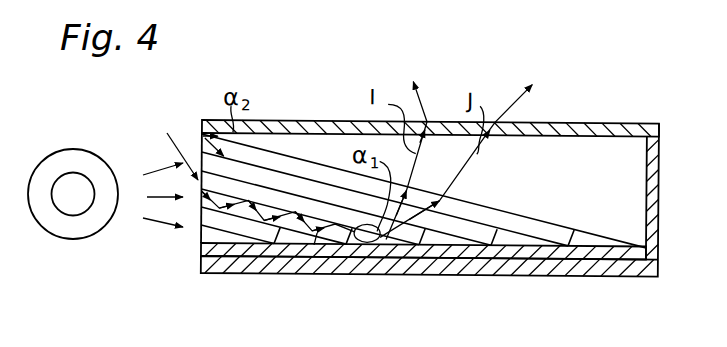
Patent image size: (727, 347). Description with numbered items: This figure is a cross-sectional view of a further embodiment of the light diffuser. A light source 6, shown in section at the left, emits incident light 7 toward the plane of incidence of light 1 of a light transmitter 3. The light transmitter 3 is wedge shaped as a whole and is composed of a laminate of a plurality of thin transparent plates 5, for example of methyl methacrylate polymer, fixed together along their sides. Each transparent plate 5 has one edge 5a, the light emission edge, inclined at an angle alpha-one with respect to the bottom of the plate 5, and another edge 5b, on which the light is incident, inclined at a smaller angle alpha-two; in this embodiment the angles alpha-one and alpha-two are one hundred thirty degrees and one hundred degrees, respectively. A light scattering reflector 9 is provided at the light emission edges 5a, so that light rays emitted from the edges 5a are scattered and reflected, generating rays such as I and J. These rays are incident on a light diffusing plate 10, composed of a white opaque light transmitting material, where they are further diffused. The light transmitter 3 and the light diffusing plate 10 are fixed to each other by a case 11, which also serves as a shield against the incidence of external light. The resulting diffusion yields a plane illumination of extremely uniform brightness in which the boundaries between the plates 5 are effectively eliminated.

The plane of incidence of light 1 is at (175, 147).
The light transmitter 3 is at (406, 203).
The transparent plate 5 is at (258, 228).
The edge of the plate 5a is at (315, 244).
The edge of the plate 5b is at (203, 148).
The light source 6 is at (73, 239).
The incident light 7 is at (166, 199).
The light scattering reflector 9 is at (461, 257).
The light diffusing plate 10 is at (310, 120).
The case 11 is at (582, 274).